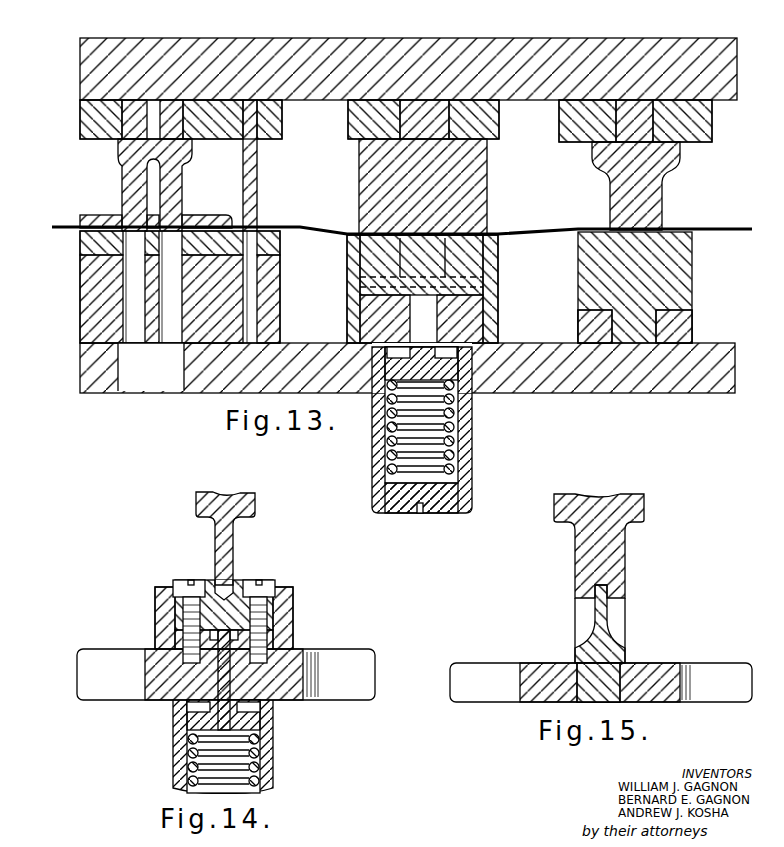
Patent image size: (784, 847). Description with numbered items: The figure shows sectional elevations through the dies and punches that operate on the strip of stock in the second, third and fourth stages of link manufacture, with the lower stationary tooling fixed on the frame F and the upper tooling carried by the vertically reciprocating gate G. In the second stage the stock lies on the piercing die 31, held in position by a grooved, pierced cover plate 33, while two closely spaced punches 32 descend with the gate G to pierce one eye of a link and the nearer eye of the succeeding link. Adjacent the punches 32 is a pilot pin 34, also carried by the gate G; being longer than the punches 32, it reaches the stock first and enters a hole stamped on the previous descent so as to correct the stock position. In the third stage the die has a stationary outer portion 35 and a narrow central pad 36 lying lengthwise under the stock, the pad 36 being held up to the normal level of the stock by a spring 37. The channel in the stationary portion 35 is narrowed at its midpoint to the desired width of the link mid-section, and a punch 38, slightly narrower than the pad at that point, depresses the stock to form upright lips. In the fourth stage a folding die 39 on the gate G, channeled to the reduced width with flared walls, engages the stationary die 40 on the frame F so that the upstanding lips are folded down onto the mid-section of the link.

In FIG. 13, the gate G is at (376, 60).
In FIG. 13, the frame F is at (555, 388).
In FIG. 14, the frame F is at (226, 674).
In FIG. 15, the frame F is at (550, 672).
In FIG. 13, the piercing die 31 is at (80, 271).
In FIG. 13, the punches 32 is at (160, 183).
In FIG. 13, the pierced cover plate 33 is at (80, 219).
In FIG. 13, the pilot pin 34 is at (258, 181).
In FIG. 13, the stationary outer portion of the die 35 is at (488, 316).
In FIG. 14, the stationary outer portion of the die 35 is at (232, 580).
In FIG. 13, the pad 36 is at (470, 252).
In FIG. 14, the pad 36 is at (227, 609).
In FIG. 13, the spring 37 is at (432, 443).
In FIG. 14, the spring 37 is at (237, 757).
In FIG. 13, the punch 38 is at (458, 178).
In FIG. 14, the punch 38 is at (233, 541).
In FIG. 13, the folding die 39 is at (656, 191).
In FIG. 15, the folding die 39 is at (618, 551).
In FIG. 13, the stationary die 40 is at (672, 283).
In FIG. 15, the stationary die 40 is at (600, 646).